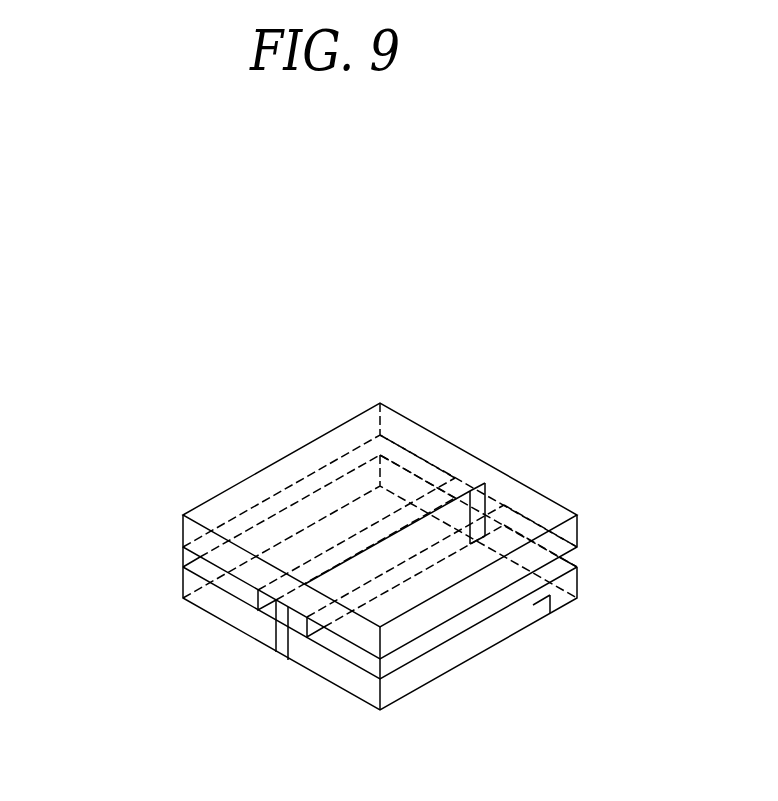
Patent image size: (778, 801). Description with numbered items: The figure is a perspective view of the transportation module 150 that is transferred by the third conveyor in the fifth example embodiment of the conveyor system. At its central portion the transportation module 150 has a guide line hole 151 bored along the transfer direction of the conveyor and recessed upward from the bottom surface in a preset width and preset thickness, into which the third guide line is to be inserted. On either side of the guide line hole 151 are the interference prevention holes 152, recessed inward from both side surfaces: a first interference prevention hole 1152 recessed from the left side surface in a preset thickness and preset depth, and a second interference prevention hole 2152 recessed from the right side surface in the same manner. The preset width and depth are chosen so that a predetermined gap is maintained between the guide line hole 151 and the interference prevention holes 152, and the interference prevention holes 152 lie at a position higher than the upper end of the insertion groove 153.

The transportation module 150 is at (254, 380).
The guide line hole 151 is at (470, 491).
The interference prevention holes 152 is at (193, 756).
The first interference prevention hole 1152 is at (230, 591).
The second interference prevention hole 2152 is at (345, 648).
The insertion groove 153 is at (550, 613).